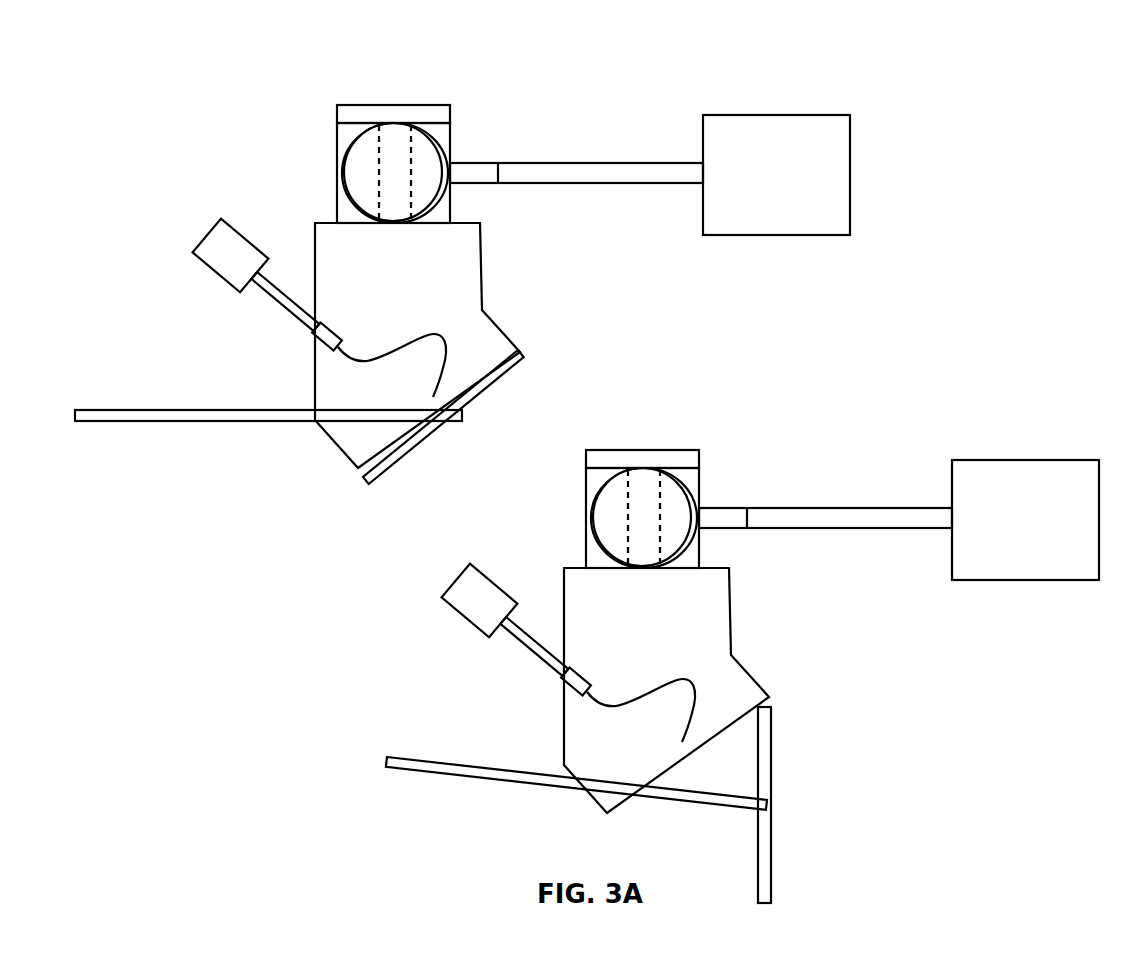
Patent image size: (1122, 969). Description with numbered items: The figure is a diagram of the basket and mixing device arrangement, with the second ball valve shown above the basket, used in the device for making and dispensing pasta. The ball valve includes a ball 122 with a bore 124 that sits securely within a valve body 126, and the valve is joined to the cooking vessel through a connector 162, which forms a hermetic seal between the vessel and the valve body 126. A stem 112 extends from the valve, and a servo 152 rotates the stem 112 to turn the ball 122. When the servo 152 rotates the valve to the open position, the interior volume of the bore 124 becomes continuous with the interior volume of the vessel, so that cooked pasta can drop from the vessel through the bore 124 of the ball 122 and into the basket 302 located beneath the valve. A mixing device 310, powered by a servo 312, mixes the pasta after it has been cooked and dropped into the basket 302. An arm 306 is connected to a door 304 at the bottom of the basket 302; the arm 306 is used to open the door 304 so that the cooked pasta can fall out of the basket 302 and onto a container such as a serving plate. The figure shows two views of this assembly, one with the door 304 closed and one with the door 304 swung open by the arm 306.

The connector 162 is at (395, 113).
The valve body 126 is at (440, 133).
The bore 124 is at (400, 180).
The ball 122 is at (362, 168).
The servo 152 is at (822, 173).
The stem 112 is at (617, 172).
The basket 302 is at (458, 305).
The door 304 is at (523, 362).
The arm 306 is at (162, 418).
The servo 312 is at (222, 253).
The mixing device 310 is at (388, 381).